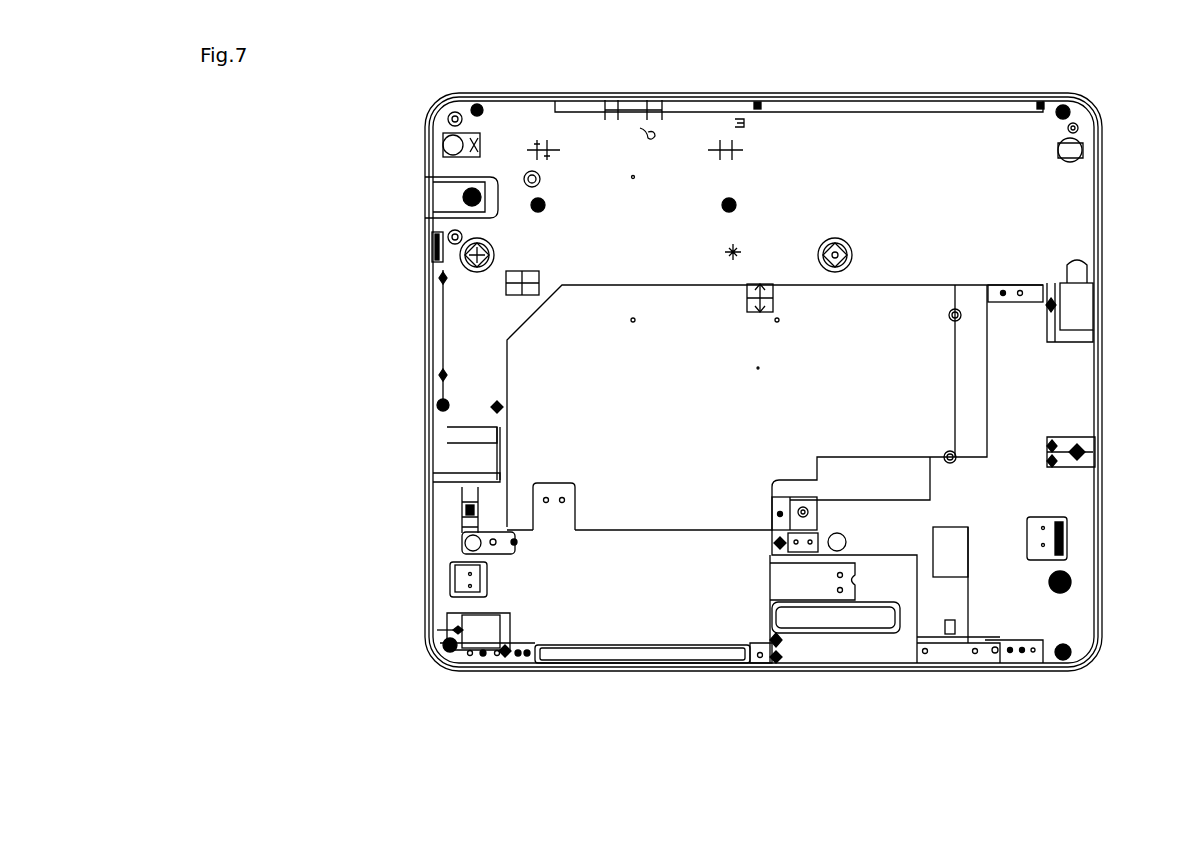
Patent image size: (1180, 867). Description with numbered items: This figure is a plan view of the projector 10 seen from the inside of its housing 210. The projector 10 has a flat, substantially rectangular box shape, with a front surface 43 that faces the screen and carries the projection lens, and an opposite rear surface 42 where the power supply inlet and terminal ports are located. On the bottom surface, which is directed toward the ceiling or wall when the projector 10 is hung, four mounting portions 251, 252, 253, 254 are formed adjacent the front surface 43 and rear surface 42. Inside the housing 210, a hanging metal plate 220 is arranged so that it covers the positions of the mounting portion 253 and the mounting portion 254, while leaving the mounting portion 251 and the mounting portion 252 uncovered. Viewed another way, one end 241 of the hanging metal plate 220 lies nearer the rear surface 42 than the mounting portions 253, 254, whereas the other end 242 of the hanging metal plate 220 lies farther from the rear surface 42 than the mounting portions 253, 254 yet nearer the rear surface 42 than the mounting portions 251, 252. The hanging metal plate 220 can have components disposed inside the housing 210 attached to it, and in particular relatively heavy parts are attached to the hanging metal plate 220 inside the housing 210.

The projector 10 is at (1125, 244).
The rear surface 42 is at (807, 668).
The front surface 43 is at (862, 93).
The housing 210 is at (1085, 209).
The hanging metal plate 220 is at (672, 537).
The one end 241 is at (520, 667).
The other end 242 is at (571, 483).
The mounting portion 251 is at (475, 263).
The mounting portion 252 is at (855, 256).
The mounting portion 253 is at (843, 530).
The mounting portion 254 is at (470, 540).